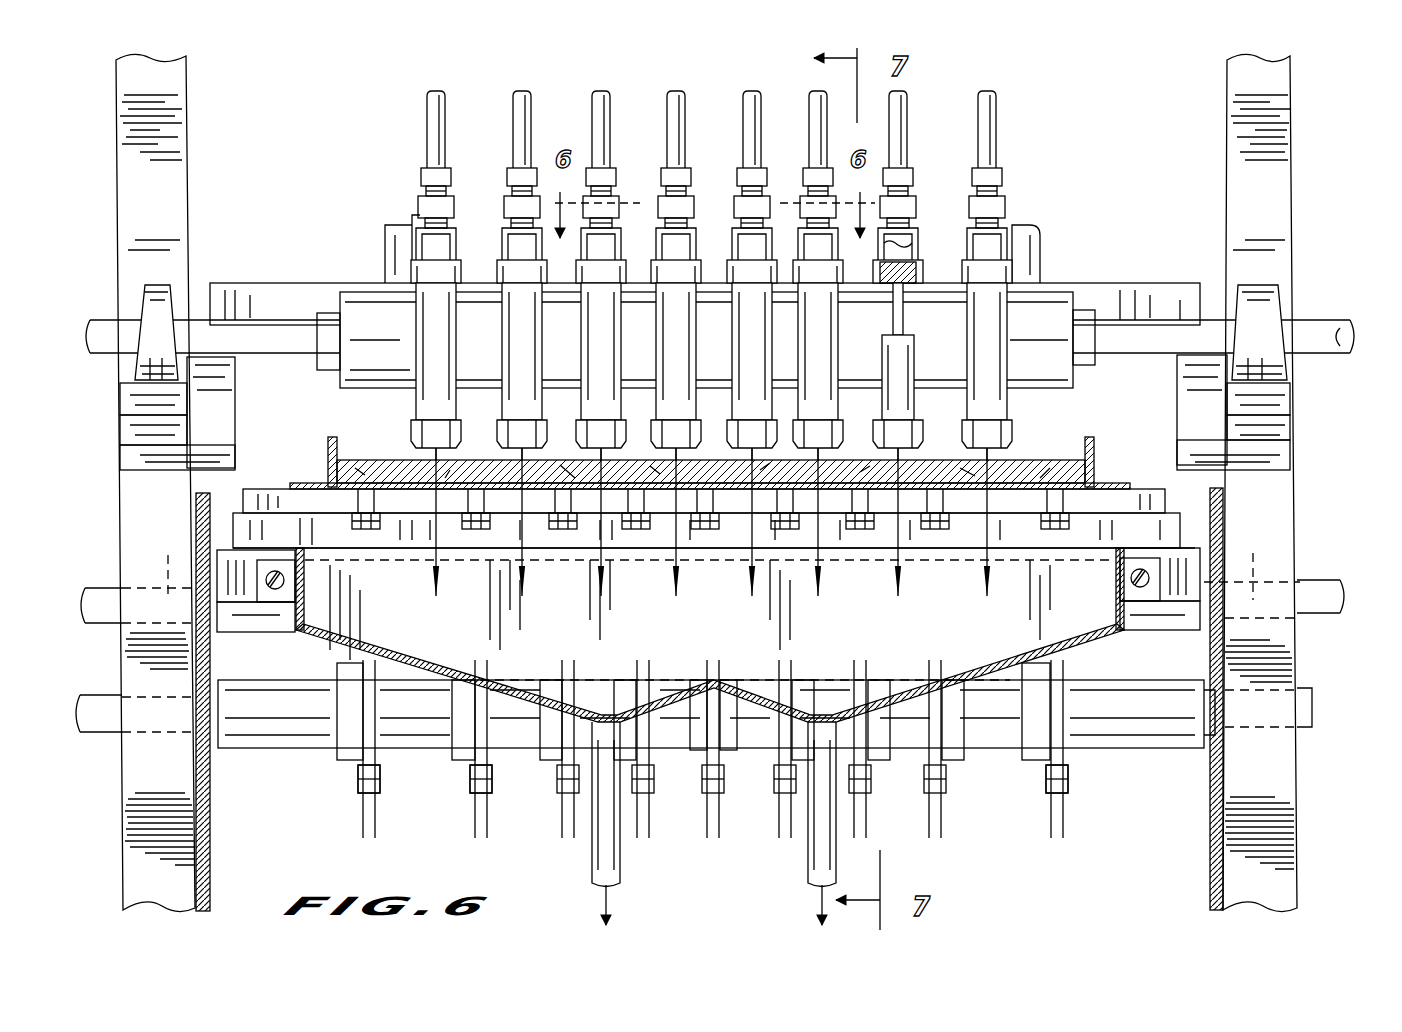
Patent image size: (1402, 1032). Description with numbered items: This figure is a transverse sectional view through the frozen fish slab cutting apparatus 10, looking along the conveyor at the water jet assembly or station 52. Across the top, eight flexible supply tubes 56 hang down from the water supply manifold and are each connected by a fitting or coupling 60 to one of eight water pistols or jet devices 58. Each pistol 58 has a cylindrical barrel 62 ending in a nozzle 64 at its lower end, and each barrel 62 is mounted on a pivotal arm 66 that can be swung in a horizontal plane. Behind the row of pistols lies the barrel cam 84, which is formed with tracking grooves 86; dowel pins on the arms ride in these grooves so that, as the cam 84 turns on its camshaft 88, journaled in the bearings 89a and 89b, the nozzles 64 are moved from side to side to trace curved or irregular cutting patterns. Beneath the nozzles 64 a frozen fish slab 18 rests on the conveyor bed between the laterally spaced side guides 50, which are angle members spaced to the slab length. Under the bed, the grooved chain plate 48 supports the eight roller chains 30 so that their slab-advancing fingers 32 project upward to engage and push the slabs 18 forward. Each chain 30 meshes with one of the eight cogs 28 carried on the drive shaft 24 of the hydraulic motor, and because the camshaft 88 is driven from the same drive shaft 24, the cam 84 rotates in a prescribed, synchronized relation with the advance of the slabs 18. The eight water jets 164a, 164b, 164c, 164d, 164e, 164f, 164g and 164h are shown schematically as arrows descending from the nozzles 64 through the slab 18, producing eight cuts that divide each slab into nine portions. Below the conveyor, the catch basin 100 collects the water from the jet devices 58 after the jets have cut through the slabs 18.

The apparatus 10 is at (1085, 800).
The frozen fish slab 18 is at (706, 613).
The drive shaft 24 is at (265, 736).
The cog 28 is at (382, 776).
The roller chain 30 is at (360, 532).
The slab-advancing finger 32 is at (378, 828).
The grooved chain plate 48 is at (656, 548).
The side guide 50 is at (326, 452).
The water jet assembly 52 is at (679, 256).
The flexible supply tube 56 is at (512, 112).
The water pistol 58 is at (365, 215).
The fitting 60 is at (505, 172).
The cylindrical barrel 62 is at (596, 358).
The nozzle 64 is at (505, 436).
The pivotal arm 66 is at (505, 278).
The barrel cam 84 is at (1045, 318).
The tracking groove 86 is at (905, 325).
The camshaft 88 is at (258, 330).
The bearing 89a is at (1272, 292).
The bearing 89b is at (162, 290).
The catch basin 100 is at (1095, 668).
The water jet 164a is at (989, 570).
The water jet 164b is at (900, 570).
The water jet 164c is at (820, 570).
The water jet 164d is at (750, 570).
The water jet 164e is at (674, 570).
The water jet 164f is at (599, 570).
The water jet 164g is at (520, 570).
The water jet 164h is at (434, 570).